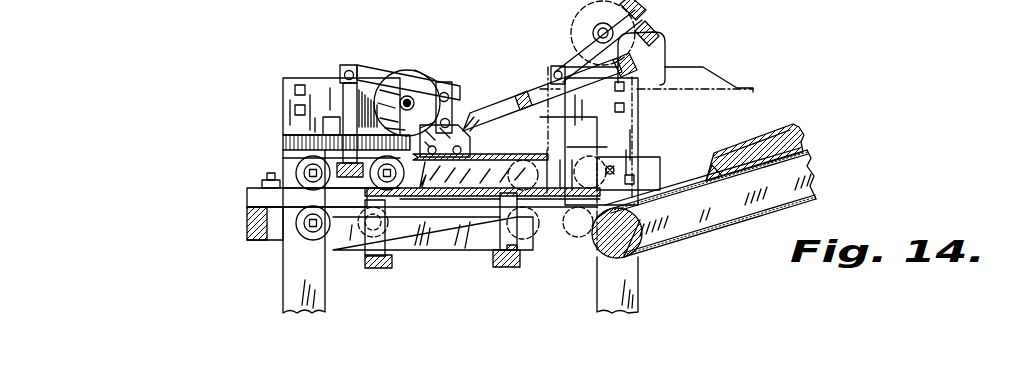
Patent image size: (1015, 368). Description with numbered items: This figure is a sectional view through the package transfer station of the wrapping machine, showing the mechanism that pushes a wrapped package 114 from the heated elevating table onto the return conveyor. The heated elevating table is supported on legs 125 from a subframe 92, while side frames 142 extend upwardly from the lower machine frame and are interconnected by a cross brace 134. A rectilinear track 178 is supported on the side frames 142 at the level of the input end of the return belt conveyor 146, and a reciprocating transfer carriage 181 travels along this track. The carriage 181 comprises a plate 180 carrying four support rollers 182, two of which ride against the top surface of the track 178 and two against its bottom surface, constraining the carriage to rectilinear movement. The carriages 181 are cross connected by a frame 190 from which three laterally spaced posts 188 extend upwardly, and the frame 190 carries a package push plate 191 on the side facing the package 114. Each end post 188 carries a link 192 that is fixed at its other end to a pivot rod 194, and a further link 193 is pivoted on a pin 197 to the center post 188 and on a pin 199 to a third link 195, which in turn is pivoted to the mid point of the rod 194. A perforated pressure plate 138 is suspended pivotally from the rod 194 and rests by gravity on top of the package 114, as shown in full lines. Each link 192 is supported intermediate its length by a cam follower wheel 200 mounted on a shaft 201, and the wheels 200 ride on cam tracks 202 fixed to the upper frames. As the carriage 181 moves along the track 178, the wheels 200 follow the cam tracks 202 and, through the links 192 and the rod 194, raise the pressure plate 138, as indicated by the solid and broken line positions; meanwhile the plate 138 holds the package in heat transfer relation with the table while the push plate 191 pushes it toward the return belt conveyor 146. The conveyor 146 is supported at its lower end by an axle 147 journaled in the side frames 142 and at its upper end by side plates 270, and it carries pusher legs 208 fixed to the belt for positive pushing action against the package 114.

The post 188 is at (347, 103).
The pin 197 is at (349, 66).
The package push plate 191 is at (357, 160).
The frame 190 is at (340, 166).
The link 193 is at (392, 72).
The link 192 is at (370, 85).
The shaft 201 is at (410, 96).
The cam follower wheel 200 is at (446, 82).
The pin 199 is at (450, 100).
The pivot rod 194 is at (462, 118).
The cam track 202 is at (528, 92).
The link 195 is at (478, 108).
The perforated pressure plate 138 is at (522, 154).
The wrapped package 114 is at (560, 180).
The support roller 182 is at (300, 170).
The transfer carriage 181 is at (290, 160).
The rectilinear track 178 is at (262, 198).
The cross brace 134 is at (252, 225).
The side frame 142 is at (298, 293).
The subframe 92 is at (430, 252).
The plate 180 is at (352, 230).
The leg 125 is at (372, 270).
The axle 147 is at (597, 256).
The side plate 270 is at (815, 178).
The return belt conveyor 146 is at (800, 145).
The pusher leg 208 is at (712, 170).